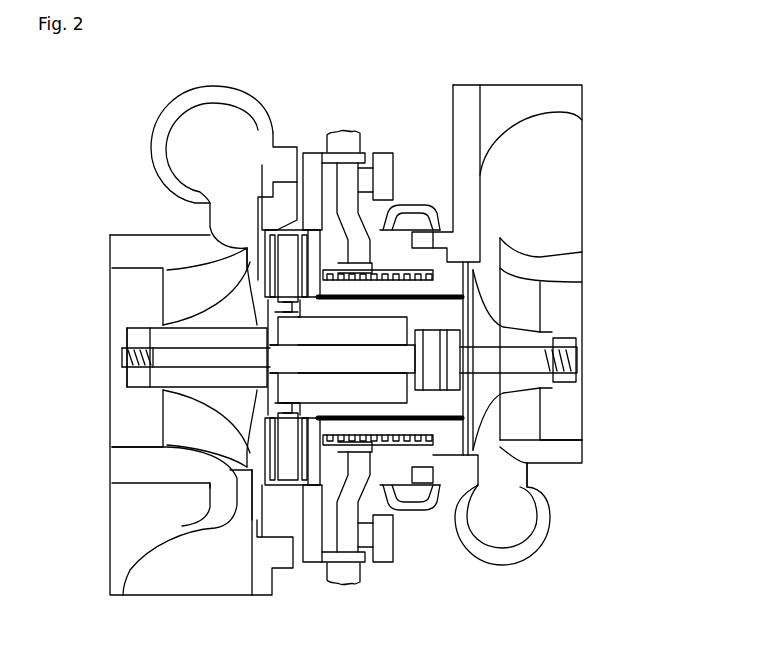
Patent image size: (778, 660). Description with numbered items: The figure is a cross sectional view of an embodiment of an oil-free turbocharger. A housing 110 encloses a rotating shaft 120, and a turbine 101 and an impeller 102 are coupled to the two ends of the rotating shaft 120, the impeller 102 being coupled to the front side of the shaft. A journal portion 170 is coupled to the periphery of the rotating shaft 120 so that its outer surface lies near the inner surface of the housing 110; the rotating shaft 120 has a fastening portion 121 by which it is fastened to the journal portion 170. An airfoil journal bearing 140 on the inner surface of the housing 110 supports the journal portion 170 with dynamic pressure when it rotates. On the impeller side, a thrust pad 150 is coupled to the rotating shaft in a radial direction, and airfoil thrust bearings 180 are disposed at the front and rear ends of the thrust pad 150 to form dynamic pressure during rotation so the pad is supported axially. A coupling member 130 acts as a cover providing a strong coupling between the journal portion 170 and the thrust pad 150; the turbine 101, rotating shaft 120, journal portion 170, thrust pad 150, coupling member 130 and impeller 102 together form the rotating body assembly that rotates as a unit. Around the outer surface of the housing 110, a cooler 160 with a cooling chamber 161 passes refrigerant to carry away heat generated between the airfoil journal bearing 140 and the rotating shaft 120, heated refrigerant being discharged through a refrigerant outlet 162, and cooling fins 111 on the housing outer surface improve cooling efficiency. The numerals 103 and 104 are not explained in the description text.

The turbine 101 is at (540, 395).
The impeller 102 is at (160, 396).
The turbine housing 103 is at (535, 180).
The compressor housing 104 is at (150, 506).
The housing 110 is at (525, 283).
The cooling fins 111 is at (312, 150).
The rotating shaft 120 is at (296, 540).
The fastening portion 121 is at (530, 428).
The coupling member 130 is at (160, 300).
The airfoil journal bearing 140 is at (412, 215).
The thrust pad 150 is at (130, 242).
The cooler 160 is at (345, 135).
The cooling chamber 161 is at (386, 152).
The refrigerant outlet 162 is at (360, 590).
The journal portion 170 is at (535, 323).
The airfoil thrust bearings 180 is at (160, 458).